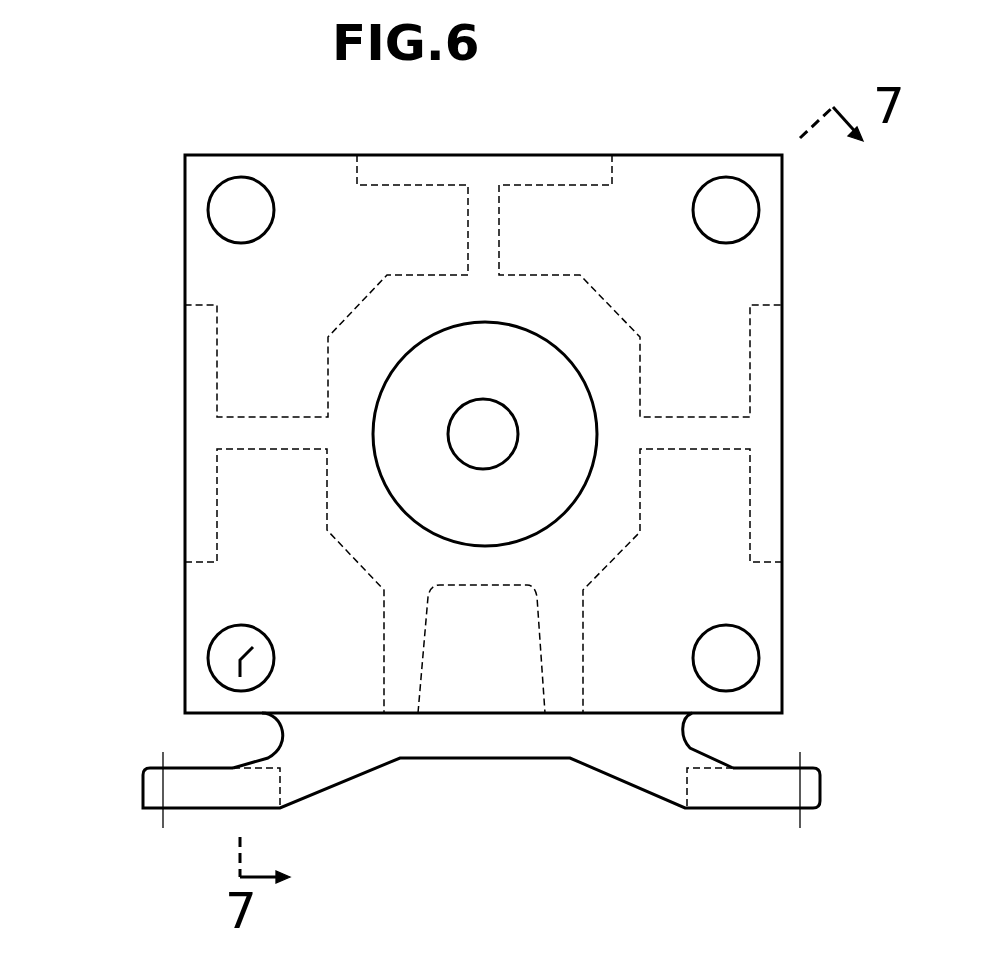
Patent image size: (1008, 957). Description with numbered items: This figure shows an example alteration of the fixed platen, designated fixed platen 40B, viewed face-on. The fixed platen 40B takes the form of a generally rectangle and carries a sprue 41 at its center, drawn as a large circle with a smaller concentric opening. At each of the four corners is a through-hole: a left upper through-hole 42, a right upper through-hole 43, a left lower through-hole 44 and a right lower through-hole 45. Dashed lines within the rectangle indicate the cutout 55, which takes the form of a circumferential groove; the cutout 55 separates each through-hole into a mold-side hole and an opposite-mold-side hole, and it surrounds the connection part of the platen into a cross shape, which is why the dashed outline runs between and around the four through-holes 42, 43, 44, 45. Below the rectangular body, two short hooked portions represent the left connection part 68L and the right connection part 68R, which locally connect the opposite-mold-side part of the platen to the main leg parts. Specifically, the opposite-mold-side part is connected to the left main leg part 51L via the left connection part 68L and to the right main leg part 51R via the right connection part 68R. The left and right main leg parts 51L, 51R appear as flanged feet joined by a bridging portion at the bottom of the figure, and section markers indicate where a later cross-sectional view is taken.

The fixed platen 40B is at (631, 128).
The sprue 41 is at (515, 427).
The left upper through-hole 42 is at (240, 213).
The right upper through-hole 43 is at (730, 210).
The left lower through-hole 44 is at (222, 660).
The right lower through-hole 45 is at (735, 655).
The cutout 55 is at (280, 290).
The left connection part 68L is at (295, 733).
The right connection part 68R is at (658, 738).
The left main leg part 51L is at (150, 788).
The right main leg part 51R is at (810, 787).